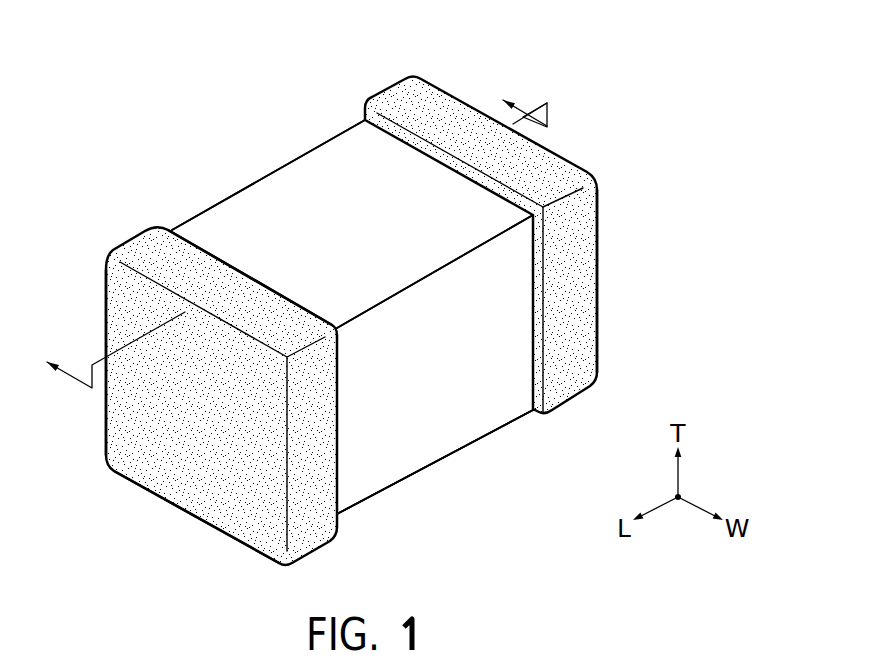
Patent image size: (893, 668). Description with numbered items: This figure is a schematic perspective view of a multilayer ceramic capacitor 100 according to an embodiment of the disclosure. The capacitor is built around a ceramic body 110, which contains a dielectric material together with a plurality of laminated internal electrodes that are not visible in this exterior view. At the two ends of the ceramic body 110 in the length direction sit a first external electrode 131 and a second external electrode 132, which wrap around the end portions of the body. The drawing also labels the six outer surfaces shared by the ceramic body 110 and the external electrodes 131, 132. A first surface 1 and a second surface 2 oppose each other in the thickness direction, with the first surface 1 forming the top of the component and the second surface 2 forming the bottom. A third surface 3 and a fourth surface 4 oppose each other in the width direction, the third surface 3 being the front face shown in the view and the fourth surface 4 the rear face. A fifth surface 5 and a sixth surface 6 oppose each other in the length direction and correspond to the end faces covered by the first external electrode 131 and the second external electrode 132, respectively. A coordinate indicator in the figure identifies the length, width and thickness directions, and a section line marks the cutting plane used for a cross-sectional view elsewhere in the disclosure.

The multilayer ceramic capacitor 100 is at (358, 291).
The ceramic body 110 is at (290, 191).
The first external electrode 131 is at (138, 245).
The second external electrode 132 is at (402, 95).
The first surface 1 is at (341, 183).
The second surface 2 is at (440, 457).
The third surface 3 is at (478, 397).
The fourth surface 4 is at (236, 238).
The fifth surface 5 is at (185, 463).
The sixth surface 6 is at (562, 243).